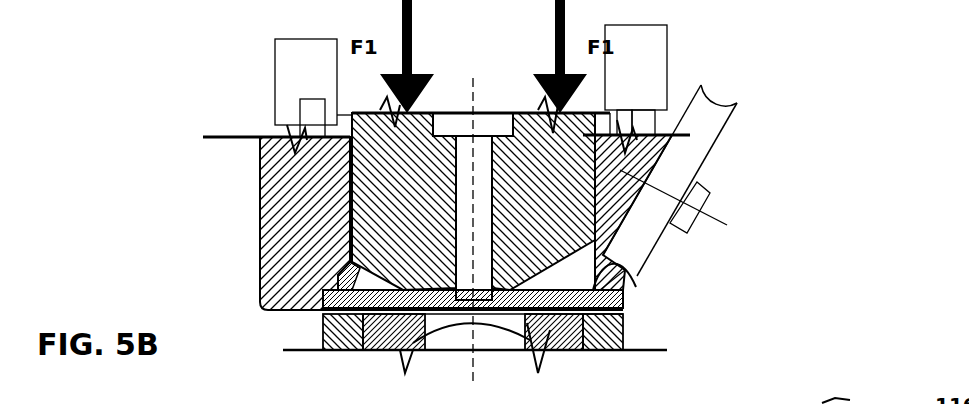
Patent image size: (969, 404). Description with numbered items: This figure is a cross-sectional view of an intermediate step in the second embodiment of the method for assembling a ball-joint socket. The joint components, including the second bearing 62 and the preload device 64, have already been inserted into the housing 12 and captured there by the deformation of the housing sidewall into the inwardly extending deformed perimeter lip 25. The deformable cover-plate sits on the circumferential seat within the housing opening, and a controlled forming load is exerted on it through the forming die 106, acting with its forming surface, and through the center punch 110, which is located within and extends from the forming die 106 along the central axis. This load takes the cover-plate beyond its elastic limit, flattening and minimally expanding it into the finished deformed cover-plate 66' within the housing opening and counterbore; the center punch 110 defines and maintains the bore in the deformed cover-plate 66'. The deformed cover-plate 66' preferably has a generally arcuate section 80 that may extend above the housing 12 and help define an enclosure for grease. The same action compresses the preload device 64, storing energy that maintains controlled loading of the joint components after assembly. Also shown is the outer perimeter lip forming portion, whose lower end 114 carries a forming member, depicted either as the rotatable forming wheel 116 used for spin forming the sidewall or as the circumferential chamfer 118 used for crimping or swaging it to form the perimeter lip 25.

The forming die 106 is at (417, 148).
The center punch 110 is at (457, 243).
The deformed perimeter lip 25 is at (262, 264).
The deformed cover-plate 66' is at (664, 274).
The housing 12 is at (610, 325).
The preload device 64 is at (325, 315).
The circumferential chamfer 118 is at (317, 295).
The arcuate section 80 is at (510, 290).
The second bearing 62 is at (563, 330).
The rotatable forming wheel 116 is at (700, 128).
The lower end 114 is at (607, 203).